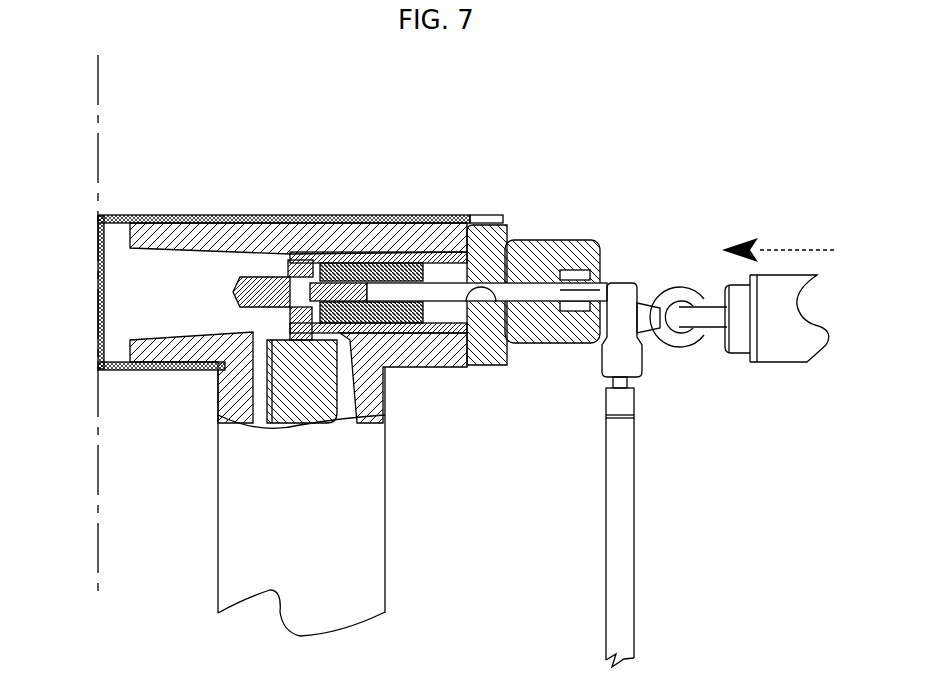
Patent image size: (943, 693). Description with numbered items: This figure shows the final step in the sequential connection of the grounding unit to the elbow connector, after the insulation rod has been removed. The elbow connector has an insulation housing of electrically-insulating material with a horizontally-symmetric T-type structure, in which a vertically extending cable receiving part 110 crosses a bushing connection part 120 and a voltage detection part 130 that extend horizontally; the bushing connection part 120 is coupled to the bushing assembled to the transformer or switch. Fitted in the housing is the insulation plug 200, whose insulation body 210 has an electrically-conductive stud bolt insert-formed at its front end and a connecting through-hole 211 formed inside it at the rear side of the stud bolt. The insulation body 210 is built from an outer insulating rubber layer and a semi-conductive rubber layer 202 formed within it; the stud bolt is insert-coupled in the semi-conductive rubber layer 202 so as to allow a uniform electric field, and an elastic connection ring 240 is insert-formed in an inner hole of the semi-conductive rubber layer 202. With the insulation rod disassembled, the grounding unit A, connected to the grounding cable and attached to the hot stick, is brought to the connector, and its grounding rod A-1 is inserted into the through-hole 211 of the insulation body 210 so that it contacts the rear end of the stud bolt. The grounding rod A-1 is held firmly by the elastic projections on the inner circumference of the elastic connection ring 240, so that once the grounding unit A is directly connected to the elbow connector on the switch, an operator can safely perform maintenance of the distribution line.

The bushing connection part 120 is at (167, 250).
The cable receiving part 110 is at (225, 545).
The semi-conductive rubber layer 202 is at (415, 372).
The elastic connection ring 240 is at (345, 255).
The voltage detection part 130 is at (405, 236).
The insulation body 210 is at (487, 217).
The insulation plug 200 is at (547, 208).
The connecting through-hole 211 is at (500, 368).
The grounding rod A-1 is at (558, 292).
The grounding unit A is at (622, 300).